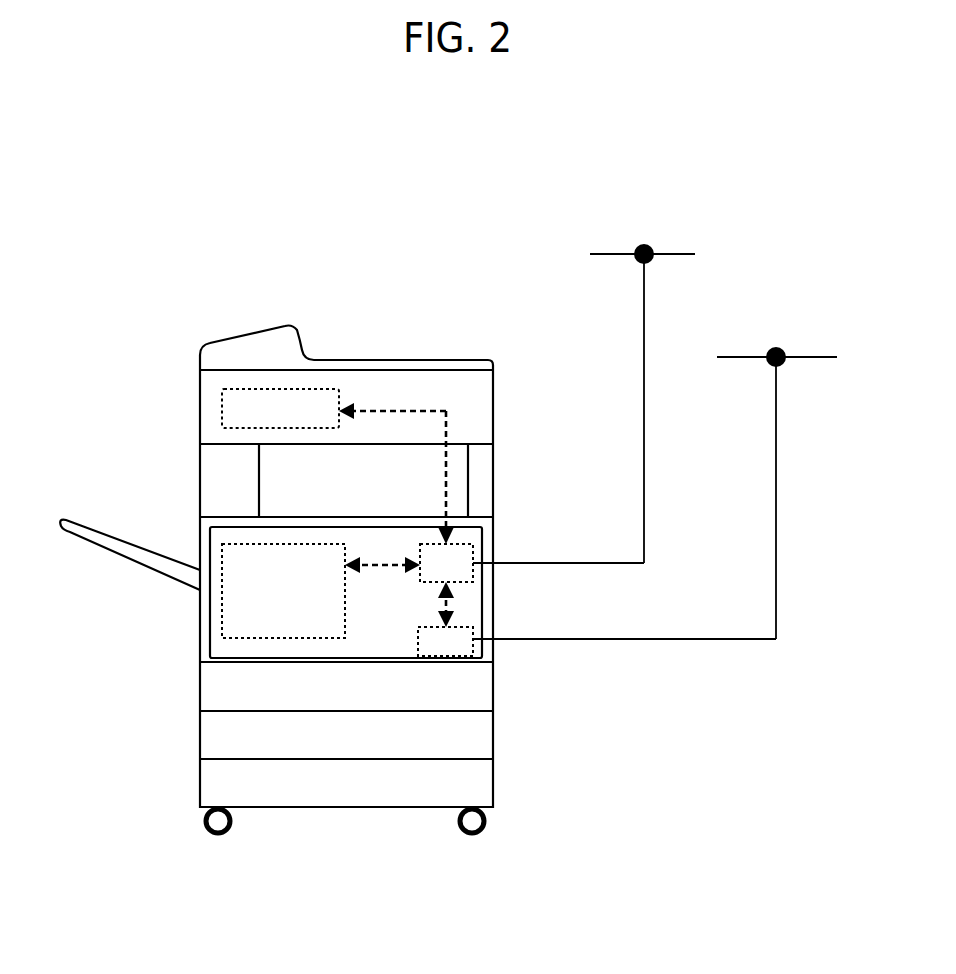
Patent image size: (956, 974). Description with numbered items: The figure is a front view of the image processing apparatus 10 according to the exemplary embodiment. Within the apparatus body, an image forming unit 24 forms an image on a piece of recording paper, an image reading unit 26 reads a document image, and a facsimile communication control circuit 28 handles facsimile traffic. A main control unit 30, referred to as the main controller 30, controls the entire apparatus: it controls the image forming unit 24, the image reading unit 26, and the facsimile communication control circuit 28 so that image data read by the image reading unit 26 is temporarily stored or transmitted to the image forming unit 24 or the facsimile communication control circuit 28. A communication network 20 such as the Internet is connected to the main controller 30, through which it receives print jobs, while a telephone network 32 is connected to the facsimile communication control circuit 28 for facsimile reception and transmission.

The image processing apparatus 10 is at (205, 295).
The communication network 20 is at (615, 253).
The image forming unit 24 is at (222, 609).
The image reading unit 26 is at (222, 412).
The facsimile communication control circuit 28 is at (463, 627).
The main control unit 30 is at (473, 551).
The telephone network 32 is at (743, 360).